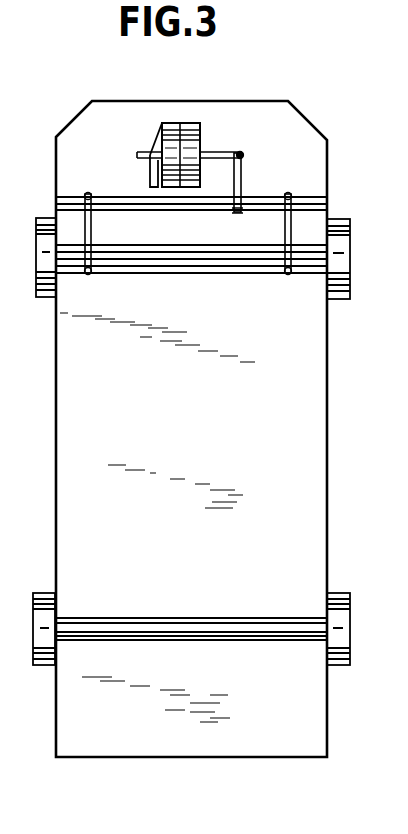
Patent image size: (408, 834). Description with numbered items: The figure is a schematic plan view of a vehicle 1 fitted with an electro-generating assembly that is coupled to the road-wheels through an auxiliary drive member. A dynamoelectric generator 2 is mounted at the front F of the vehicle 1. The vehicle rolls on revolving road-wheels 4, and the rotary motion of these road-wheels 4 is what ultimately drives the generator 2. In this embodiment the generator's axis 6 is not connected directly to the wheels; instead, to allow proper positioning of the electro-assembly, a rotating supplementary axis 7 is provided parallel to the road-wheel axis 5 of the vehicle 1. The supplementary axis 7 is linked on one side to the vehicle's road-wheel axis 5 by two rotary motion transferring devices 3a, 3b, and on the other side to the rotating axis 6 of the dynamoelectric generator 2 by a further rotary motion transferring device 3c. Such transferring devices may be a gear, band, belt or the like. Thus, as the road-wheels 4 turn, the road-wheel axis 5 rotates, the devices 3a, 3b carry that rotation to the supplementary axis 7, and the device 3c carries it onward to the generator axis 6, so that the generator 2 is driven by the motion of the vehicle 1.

The front F is at (114, 101).
The vehicle 1 is at (200, 428).
The dynamoelectric generator 2 is at (174, 124).
The rotary motion transferring device 3a is at (90, 275).
The rotary motion transferring device 3b is at (284, 240).
The rotary motion transferring device 3c is at (244, 173).
The road-wheels 4 is at (45, 298).
The road-wheel axis 5 is at (215, 271).
The generator axis 6 is at (218, 152).
The supplementary axis 7 is at (108, 197).